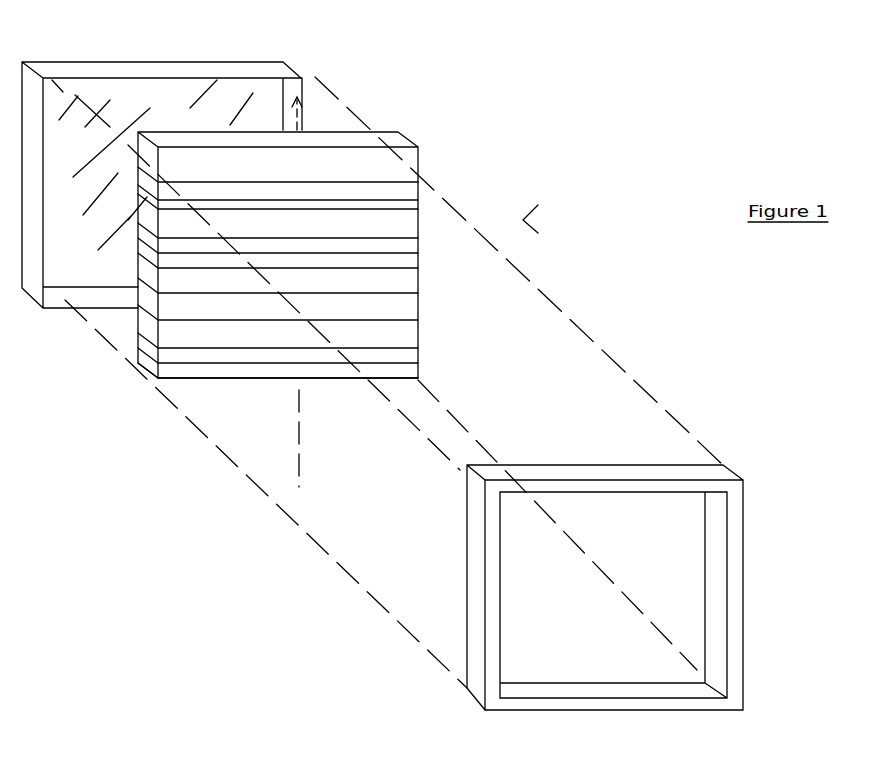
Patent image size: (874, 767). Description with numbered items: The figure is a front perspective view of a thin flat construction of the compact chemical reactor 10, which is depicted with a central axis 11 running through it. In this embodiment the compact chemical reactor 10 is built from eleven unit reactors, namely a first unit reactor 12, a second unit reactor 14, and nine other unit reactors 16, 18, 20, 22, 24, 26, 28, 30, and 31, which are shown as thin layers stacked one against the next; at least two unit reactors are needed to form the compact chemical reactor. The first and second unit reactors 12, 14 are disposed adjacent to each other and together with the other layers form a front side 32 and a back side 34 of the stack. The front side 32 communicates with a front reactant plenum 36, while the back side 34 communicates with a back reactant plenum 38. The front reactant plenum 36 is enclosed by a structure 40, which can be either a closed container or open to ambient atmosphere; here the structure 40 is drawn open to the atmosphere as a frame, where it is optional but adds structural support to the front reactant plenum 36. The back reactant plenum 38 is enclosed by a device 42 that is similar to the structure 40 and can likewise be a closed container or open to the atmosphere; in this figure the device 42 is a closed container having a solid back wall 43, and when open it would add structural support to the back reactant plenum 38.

The compact chemical reactor 10 is at (150, 362).
The central axis 11 is at (311, 113).
The first unit reactor 12 is at (408, 303).
The second unit reactor 14 is at (408, 335).
The unit reactor 16 is at (412, 358).
The unit reactor 18 is at (410, 377).
The unit reactor 20 is at (400, 282).
The unit reactor 22 is at (408, 267).
The unit reactor 24 is at (408, 245).
The unit reactor 26 is at (408, 218).
The unit reactor 28 is at (408, 204).
The unit reactor 30 is at (403, 192).
The unit reactor 31 is at (403, 165).
The front side 32 is at (523, 220).
The back side 34 is at (333, 130).
The front reactant plenum 36 is at (688, 623).
The back reactant plenum 38 is at (303, 80).
The structure 40 is at (733, 547).
The device 42 is at (233, 61).
The solid back wall 43 is at (83, 106).